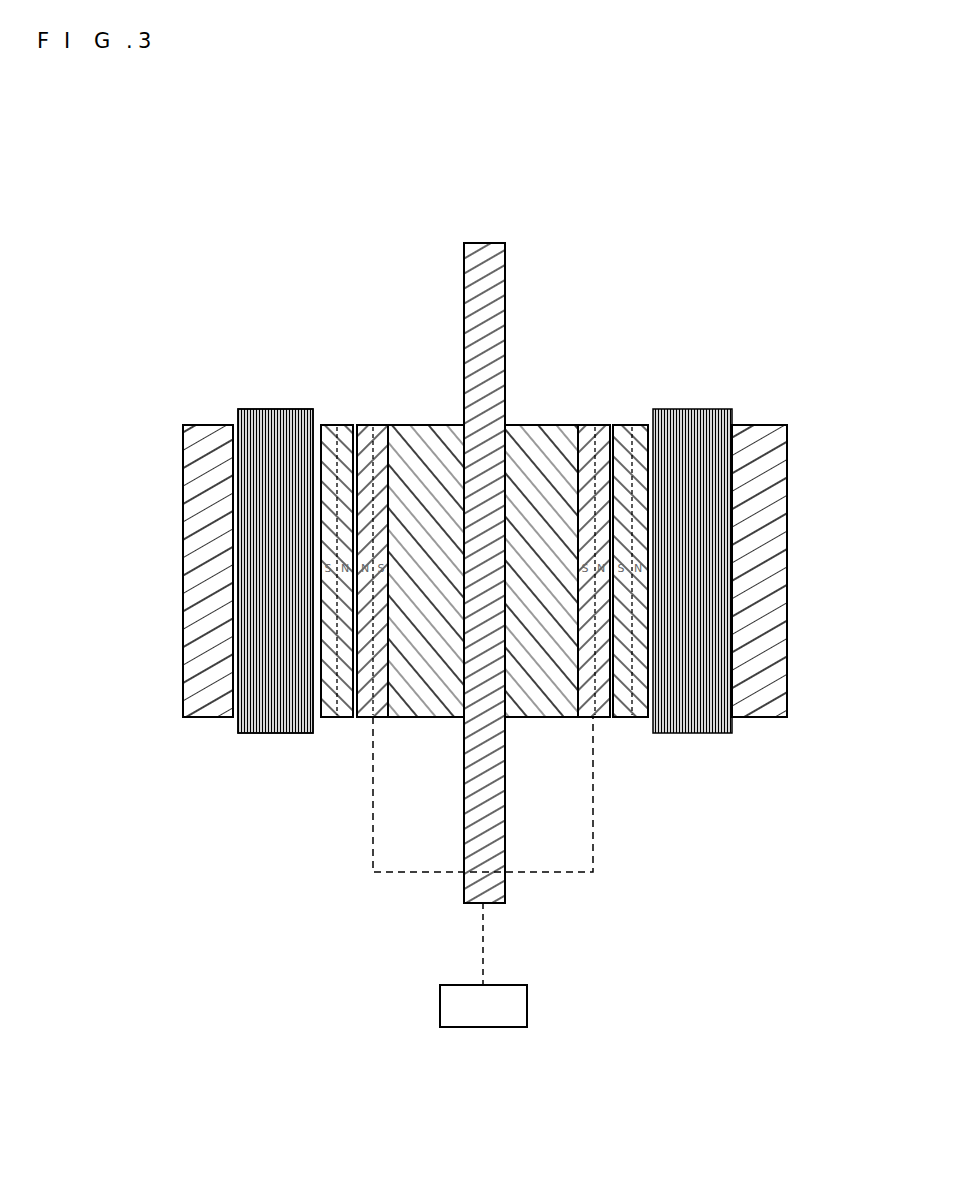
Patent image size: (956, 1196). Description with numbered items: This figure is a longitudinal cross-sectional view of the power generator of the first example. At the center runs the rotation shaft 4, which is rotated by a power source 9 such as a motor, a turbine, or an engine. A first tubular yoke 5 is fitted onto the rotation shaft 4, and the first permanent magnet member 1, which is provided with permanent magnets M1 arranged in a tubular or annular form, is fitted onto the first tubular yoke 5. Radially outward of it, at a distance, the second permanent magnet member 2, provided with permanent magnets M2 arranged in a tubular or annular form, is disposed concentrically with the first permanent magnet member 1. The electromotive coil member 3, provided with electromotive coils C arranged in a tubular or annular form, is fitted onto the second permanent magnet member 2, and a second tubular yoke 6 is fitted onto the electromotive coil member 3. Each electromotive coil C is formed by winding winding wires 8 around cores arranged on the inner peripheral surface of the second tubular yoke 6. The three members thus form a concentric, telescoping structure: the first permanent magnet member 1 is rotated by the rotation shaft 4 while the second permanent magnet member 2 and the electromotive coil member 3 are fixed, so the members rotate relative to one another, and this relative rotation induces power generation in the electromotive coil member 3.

The first permanent magnet member 1 is at (595, 416).
The second permanent magnet member 2 is at (335, 416).
The electromotive coil member 3 is at (738, 406).
The rotation shaft 4 is at (490, 243).
The first tubular yoke 5 is at (558, 425).
The second tubular yoke 6 is at (193, 467).
The winding wires 8 is at (240, 733).
The power source 9 is at (497, 1018).
The electromotive coil C is at (244, 408).
The permanent magnet M1 is at (380, 425).
The permanent magnet M2 is at (627, 425).